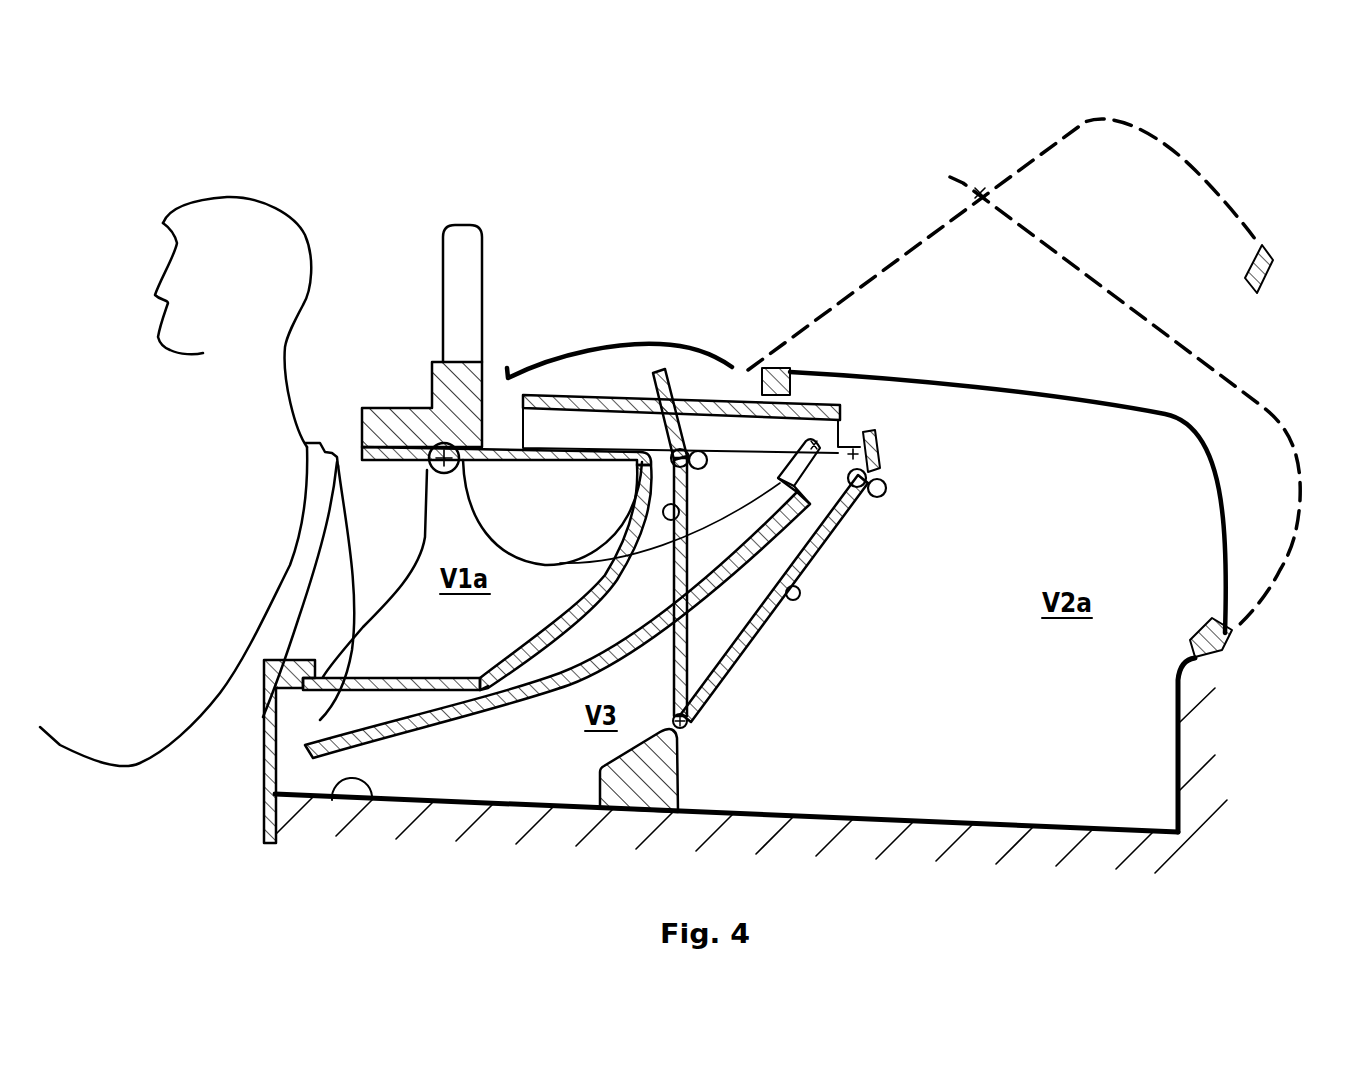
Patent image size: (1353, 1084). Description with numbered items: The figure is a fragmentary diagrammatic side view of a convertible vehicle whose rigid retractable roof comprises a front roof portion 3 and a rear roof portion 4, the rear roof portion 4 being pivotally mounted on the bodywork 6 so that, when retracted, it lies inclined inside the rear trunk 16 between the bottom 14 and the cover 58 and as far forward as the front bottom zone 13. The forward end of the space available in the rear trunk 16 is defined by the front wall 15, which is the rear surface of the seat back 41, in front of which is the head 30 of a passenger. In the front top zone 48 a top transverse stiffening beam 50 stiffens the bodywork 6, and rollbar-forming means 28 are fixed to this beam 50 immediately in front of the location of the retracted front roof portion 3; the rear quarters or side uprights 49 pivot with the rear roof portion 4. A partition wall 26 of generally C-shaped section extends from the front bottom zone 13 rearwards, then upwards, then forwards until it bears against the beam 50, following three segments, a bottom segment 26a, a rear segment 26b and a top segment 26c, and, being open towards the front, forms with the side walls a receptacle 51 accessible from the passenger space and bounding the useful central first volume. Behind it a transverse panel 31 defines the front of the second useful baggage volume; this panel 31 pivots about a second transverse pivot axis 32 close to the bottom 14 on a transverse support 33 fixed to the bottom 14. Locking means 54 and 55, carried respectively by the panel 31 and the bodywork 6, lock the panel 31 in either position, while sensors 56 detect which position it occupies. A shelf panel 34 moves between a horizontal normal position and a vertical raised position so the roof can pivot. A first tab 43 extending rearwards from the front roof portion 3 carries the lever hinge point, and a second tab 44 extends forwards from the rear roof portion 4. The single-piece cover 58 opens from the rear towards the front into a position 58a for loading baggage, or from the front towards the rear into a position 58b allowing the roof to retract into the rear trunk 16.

The front roof portion 3 is at (562, 392).
The rear roof portion 4 is at (358, 620).
The bodywork 6 is at (258, 791).
The front bottom zone 13 is at (297, 706).
The bottom 14 is at (332, 800).
The front wall 15 is at (312, 540).
The rear trunk 16 is at (1117, 478).
The partition wall 26 is at (533, 655).
The bottom segment 26a is at (390, 675).
The rear segment 26b is at (603, 573).
The top segment 26c is at (500, 447).
The rollbar-forming means 28 is at (460, 224).
The head 30 is at (240, 293).
The transverse panel 31 is at (770, 642).
The second transverse pivot axis 32 is at (690, 724).
The transverse support 33 is at (662, 780).
The shelf panel 34 is at (604, 343).
The seat back 41 is at (302, 449).
The first tab 43 is at (843, 430).
The second tab 44 is at (815, 505).
The front top zone 48 is at (392, 498).
The side uprights 49 is at (440, 512).
The top transverse stiffening beam 50 is at (380, 408).
The receptacle 51 is at (497, 660).
The locking means 54 is at (675, 449).
The locking means 55 is at (704, 451).
The sensors 56 is at (800, 593).
The cover 58 is at (1007, 390).
The baggage loading position 58a is at (1040, 147).
The roof retraction position 58b is at (1250, 393).